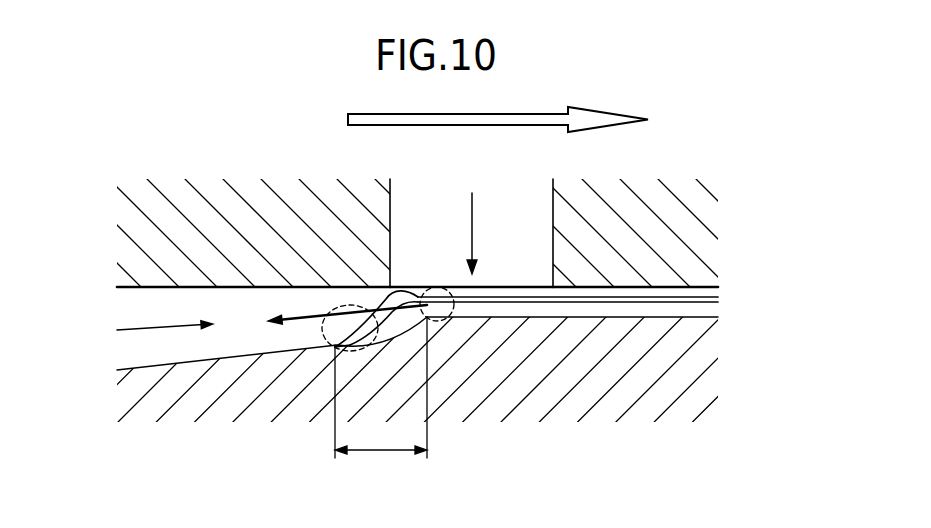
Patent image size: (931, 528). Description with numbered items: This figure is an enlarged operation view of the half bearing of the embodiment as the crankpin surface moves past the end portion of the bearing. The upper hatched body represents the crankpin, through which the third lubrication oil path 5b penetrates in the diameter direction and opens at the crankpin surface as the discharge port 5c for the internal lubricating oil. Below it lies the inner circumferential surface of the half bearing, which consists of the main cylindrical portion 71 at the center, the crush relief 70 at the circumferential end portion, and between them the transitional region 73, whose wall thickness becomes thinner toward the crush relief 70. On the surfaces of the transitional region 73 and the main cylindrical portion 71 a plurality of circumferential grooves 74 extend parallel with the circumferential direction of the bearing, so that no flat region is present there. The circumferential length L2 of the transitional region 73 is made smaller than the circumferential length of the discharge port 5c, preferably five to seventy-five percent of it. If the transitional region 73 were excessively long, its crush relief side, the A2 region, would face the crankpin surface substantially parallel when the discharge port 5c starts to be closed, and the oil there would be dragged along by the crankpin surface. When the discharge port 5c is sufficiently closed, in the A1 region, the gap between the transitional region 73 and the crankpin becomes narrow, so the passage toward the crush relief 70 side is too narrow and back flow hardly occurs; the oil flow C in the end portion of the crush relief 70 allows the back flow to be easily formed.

The third lubrication oil path 5b is at (541, 193).
The discharge port 5c is at (507, 276).
The crush relief 70 is at (238, 375).
The main cylindrical portion 71 is at (642, 303).
The transitional region 73 is at (399, 318).
The circumferential groove 74 is at (716, 307).
The A1 region A1 is at (431, 283).
The A2 region A2 is at (340, 332).
The oil flow C is at (150, 331).
The circumferential length of the transitional region L2 is at (381, 397).